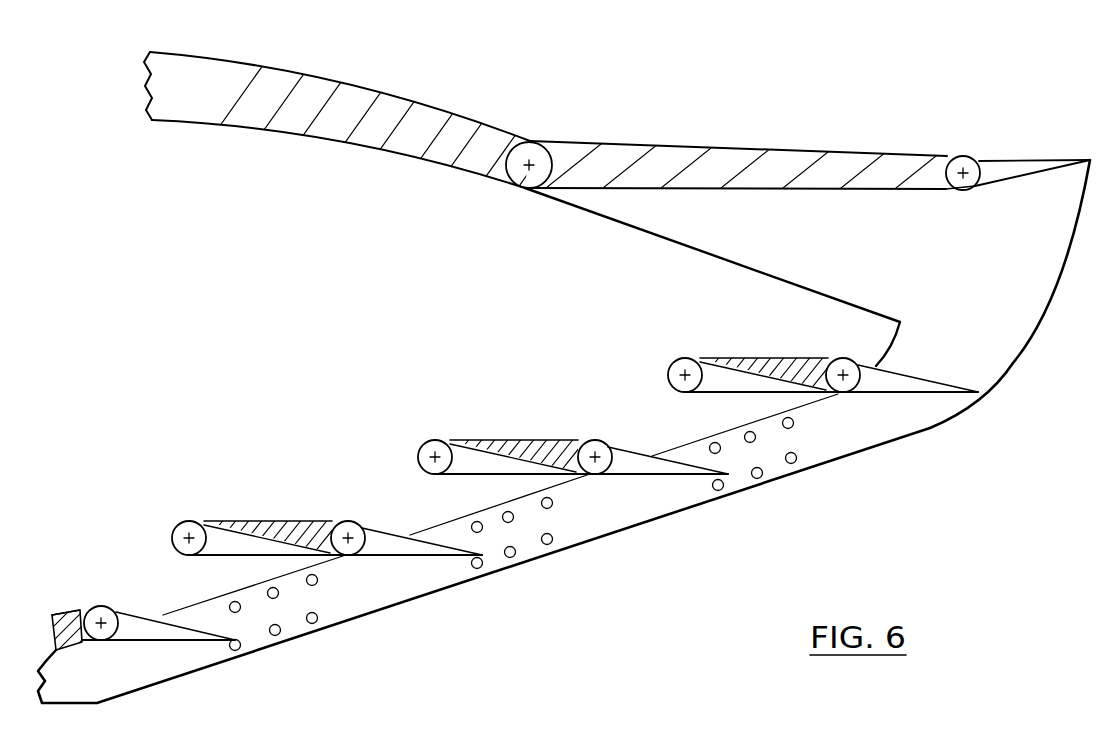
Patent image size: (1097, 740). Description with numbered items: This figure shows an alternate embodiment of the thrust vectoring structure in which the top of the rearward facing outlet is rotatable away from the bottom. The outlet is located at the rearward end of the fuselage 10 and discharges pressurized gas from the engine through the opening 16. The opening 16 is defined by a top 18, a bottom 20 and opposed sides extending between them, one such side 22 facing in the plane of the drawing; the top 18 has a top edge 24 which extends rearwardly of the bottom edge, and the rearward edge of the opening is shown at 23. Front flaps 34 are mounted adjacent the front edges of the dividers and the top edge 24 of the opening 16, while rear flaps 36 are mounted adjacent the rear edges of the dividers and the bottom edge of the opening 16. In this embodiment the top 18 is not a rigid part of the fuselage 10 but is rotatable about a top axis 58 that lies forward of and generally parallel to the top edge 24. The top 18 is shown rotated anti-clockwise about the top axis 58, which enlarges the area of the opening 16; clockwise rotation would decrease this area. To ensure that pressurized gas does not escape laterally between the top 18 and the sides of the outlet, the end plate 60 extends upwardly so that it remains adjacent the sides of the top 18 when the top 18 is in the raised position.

The fuselage 10 is at (382, 117).
The opening 16 is at (722, 518).
The top 18 is at (781, 158).
The bottom 20 is at (70, 612).
The side 22 is at (612, 316).
The rearward edge of the opening 23 is at (466, 518).
The top edge 24 is at (943, 178).
The front flaps 34 is at (1003, 184).
The rear flaps 36 is at (883, 389).
The top axis 58 is at (527, 170).
The end plate 60 is at (862, 253).